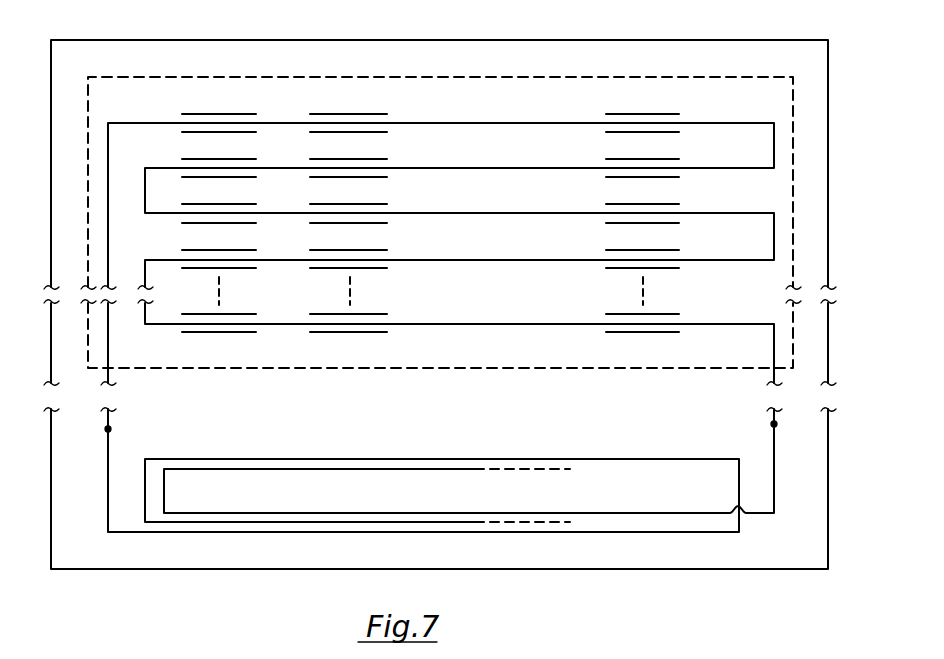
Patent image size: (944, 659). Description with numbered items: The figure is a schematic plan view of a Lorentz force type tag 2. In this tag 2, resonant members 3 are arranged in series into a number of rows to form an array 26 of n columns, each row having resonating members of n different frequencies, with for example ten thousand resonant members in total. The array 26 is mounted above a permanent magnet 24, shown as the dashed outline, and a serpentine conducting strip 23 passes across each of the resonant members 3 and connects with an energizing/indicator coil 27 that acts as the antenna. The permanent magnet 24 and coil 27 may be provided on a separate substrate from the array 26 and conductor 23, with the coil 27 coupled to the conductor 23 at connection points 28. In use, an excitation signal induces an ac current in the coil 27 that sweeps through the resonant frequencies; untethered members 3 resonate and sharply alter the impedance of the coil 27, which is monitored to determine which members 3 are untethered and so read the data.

The tag 2 is at (729, 40).
The resonant members 3 is at (361, 113).
The serpentine conducting strip 23 is at (774, 152).
The permanent magnet 24 is at (793, 101).
The array 26 is at (464, 100).
The energizing/indicator coil 27 is at (478, 458).
The connection points 28 is at (111, 429).